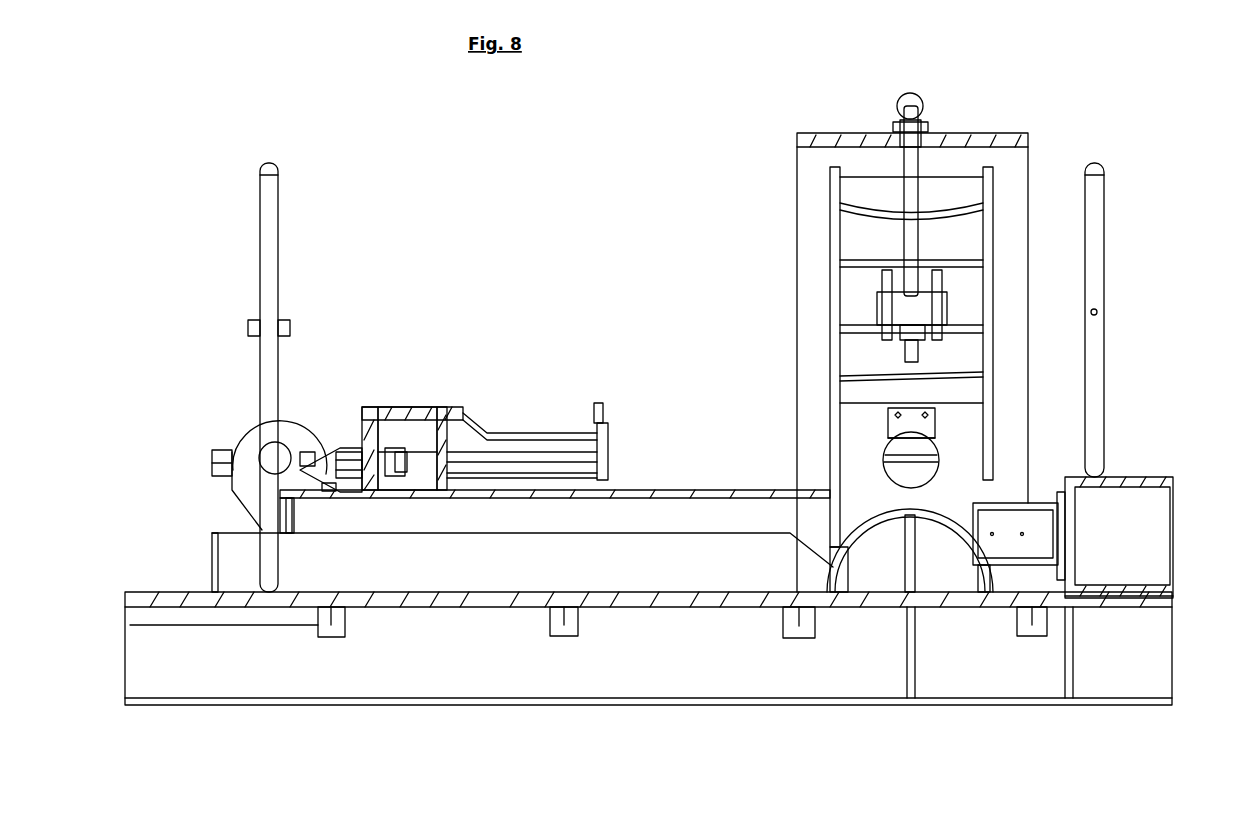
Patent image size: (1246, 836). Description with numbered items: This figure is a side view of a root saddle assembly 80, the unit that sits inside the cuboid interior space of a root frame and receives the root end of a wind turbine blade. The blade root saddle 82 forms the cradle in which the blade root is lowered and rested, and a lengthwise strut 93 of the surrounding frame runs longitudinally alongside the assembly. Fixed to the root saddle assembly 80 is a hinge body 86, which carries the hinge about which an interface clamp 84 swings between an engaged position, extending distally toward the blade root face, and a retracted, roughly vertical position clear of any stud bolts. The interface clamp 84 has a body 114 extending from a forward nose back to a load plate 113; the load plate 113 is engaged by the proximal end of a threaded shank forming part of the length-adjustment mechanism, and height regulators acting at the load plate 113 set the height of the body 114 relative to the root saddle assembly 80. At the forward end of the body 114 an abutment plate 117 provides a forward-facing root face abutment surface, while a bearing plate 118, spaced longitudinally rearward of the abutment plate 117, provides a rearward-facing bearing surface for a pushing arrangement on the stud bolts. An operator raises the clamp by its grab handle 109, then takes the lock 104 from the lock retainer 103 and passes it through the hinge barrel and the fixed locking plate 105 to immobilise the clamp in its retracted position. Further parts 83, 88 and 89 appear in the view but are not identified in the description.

The root saddle assembly 80 is at (392, 102).
The blade root saddle 82 is at (850, 135).
The knob 83 is at (923, 112).
The interface clamp 84 is at (547, 283).
The hinge body 86 is at (247, 483).
The support post 88 is at (967, 383).
The clamp 89 is at (918, 468).
The lengthwise strut 93 is at (748, 676).
The lock retainer 103 is at (330, 495).
The lock 104 is at (227, 457).
The locking plate 105 is at (284, 508).
The grab handle 109 is at (598, 403).
The load plate 113 is at (277, 457).
The body portion 114 is at (497, 442).
The abutment plate 117 is at (603, 442).
The bearing plate 118 is at (441, 415).